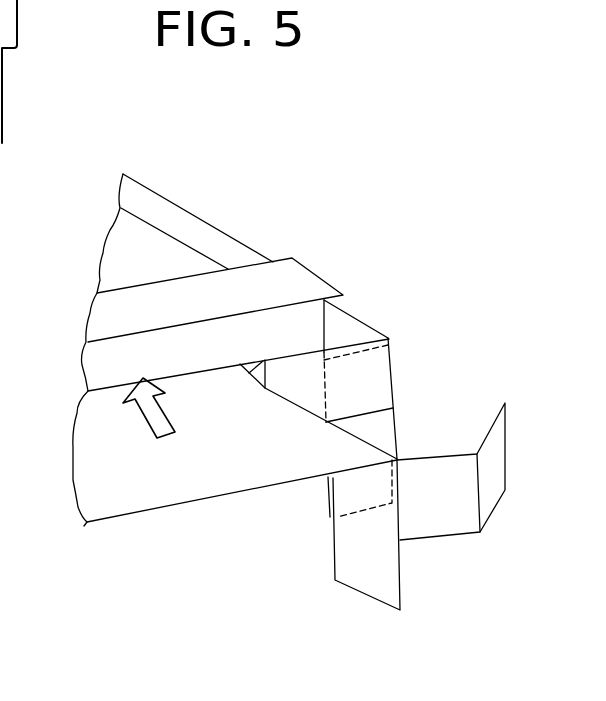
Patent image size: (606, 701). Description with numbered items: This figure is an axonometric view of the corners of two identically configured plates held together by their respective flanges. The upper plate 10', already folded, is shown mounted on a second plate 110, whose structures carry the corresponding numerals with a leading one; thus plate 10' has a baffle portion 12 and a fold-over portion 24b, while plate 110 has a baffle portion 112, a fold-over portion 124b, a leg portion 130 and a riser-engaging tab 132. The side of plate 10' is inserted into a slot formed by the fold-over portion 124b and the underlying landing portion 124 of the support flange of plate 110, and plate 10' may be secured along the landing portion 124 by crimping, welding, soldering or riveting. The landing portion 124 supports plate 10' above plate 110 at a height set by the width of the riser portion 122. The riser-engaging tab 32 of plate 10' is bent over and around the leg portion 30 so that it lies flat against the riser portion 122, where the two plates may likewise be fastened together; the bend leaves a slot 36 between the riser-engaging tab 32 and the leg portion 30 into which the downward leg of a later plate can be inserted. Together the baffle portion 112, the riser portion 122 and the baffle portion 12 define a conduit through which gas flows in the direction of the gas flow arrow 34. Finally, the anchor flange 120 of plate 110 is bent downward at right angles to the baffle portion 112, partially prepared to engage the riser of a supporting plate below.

The plate 10' is at (80, 254).
The baffle portion 12 is at (163, 263).
The fold-over portion 24b is at (248, 307).
The leg portion 30 is at (373, 430).
The riser-engaging tab 32 is at (368, 380).
The gas flow arrow 34 is at (139, 411).
The slot 36 is at (354, 346).
The second plate 110 is at (174, 521).
The baffle portion 112 is at (283, 458).
The anchor flange 120 is at (411, 553).
The riser portion 122 is at (257, 367).
The landing portion 124 is at (164, 186).
The fold-over portion 124b is at (207, 240).
The leg portion 130 is at (383, 557).
The riser-engaging tab 132 is at (490, 493).